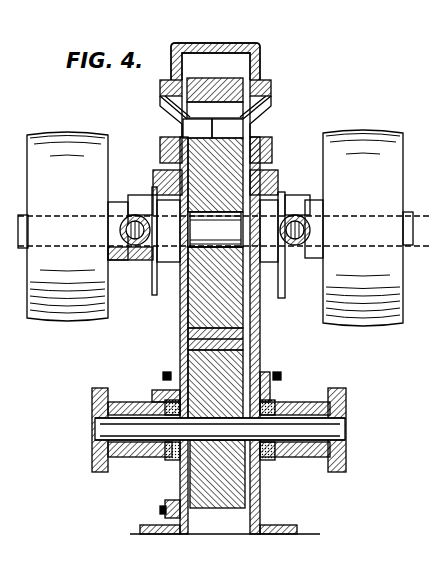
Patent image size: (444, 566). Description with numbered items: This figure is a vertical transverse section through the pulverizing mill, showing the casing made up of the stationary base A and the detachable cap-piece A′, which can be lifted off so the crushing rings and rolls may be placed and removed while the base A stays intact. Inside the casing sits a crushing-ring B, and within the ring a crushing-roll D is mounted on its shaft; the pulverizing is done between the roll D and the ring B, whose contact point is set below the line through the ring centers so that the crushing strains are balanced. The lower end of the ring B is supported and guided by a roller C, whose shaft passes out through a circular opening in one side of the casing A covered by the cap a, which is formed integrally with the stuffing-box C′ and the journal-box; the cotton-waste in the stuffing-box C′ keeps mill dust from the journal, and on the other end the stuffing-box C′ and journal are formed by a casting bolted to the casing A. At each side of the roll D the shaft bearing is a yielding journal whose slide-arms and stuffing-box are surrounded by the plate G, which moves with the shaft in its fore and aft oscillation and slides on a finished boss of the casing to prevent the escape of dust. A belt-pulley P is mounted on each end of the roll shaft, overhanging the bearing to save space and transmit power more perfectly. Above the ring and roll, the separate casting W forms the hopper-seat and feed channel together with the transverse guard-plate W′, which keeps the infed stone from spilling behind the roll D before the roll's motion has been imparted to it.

The cap-piece A′ is at (230, 44).
The casing base A is at (260, 336).
The crushing-ring B is at (215, 207).
The hopper-seat casting W is at (180, 136).
The transverse guard-plate W′ is at (213, 128).
The crushing-roll D is at (215, 175).
The supporting-roller C is at (216, 429).
The stuffing-box C′ is at (155, 398).
The belt-pulley P is at (215, 228).
The plate G is at (157, 298).
The cap a is at (168, 372).